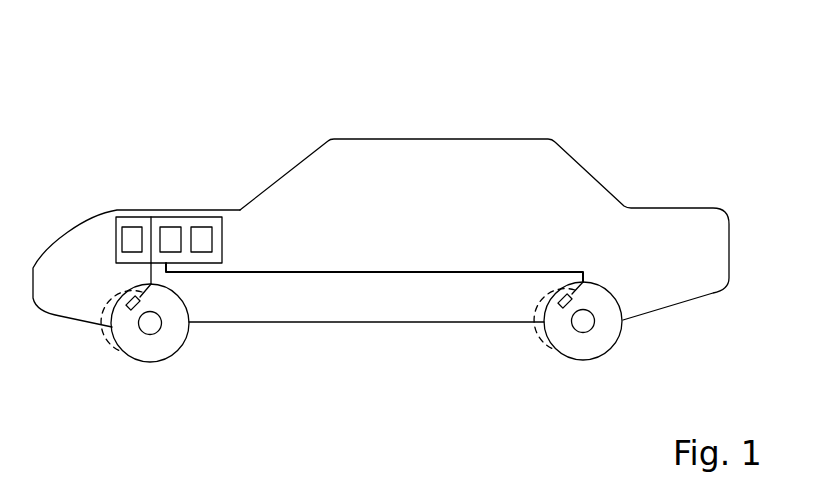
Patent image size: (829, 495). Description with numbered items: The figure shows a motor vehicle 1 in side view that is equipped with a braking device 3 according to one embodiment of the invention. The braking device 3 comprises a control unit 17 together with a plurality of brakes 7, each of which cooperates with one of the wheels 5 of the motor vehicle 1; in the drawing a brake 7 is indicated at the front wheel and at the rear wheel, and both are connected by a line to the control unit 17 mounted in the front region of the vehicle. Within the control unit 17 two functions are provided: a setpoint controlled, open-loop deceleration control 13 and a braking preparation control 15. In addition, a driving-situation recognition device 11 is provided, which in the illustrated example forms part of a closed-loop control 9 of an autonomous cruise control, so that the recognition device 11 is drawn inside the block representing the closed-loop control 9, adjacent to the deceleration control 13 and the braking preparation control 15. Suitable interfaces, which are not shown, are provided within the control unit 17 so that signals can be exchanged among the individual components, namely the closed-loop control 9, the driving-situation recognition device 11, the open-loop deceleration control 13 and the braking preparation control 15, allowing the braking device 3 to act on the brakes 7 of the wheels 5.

The motor vehicle 1 is at (643, 108).
The braking device 3 is at (389, 225).
The wheels 5 is at (172, 350).
The brakes 7 is at (123, 352).
The closed-loop control 9 is at (118, 238).
The driving-situation recognition device 11 is at (133, 227).
The open-loop deceleration control 13 is at (172, 227).
The braking preparation control 15 is at (207, 240).
The control unit 17 is at (233, 226).